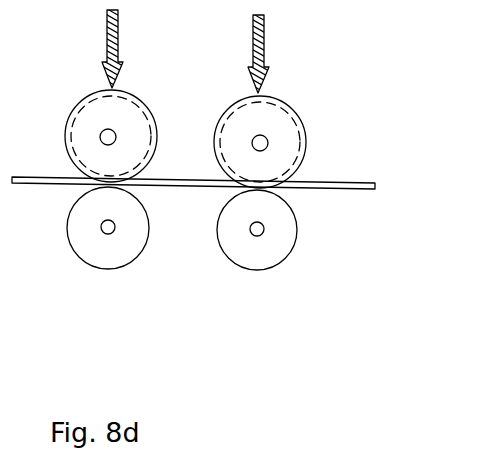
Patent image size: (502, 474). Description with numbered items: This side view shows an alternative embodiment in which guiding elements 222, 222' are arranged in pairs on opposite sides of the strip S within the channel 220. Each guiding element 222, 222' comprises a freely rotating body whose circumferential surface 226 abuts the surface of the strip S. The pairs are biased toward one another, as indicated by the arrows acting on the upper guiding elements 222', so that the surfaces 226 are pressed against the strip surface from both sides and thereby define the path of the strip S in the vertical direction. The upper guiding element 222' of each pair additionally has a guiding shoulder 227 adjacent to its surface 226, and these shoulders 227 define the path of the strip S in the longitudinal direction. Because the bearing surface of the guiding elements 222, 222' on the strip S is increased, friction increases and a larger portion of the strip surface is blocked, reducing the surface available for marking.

The channel 220 is at (204, 180).
The guiding element 222 is at (196, 283).
The guiding element 222' is at (229, 75).
The circumferential surface 226 is at (152, 105).
The guiding shoulder 227 is at (77, 93).
The strip S is at (340, 184).